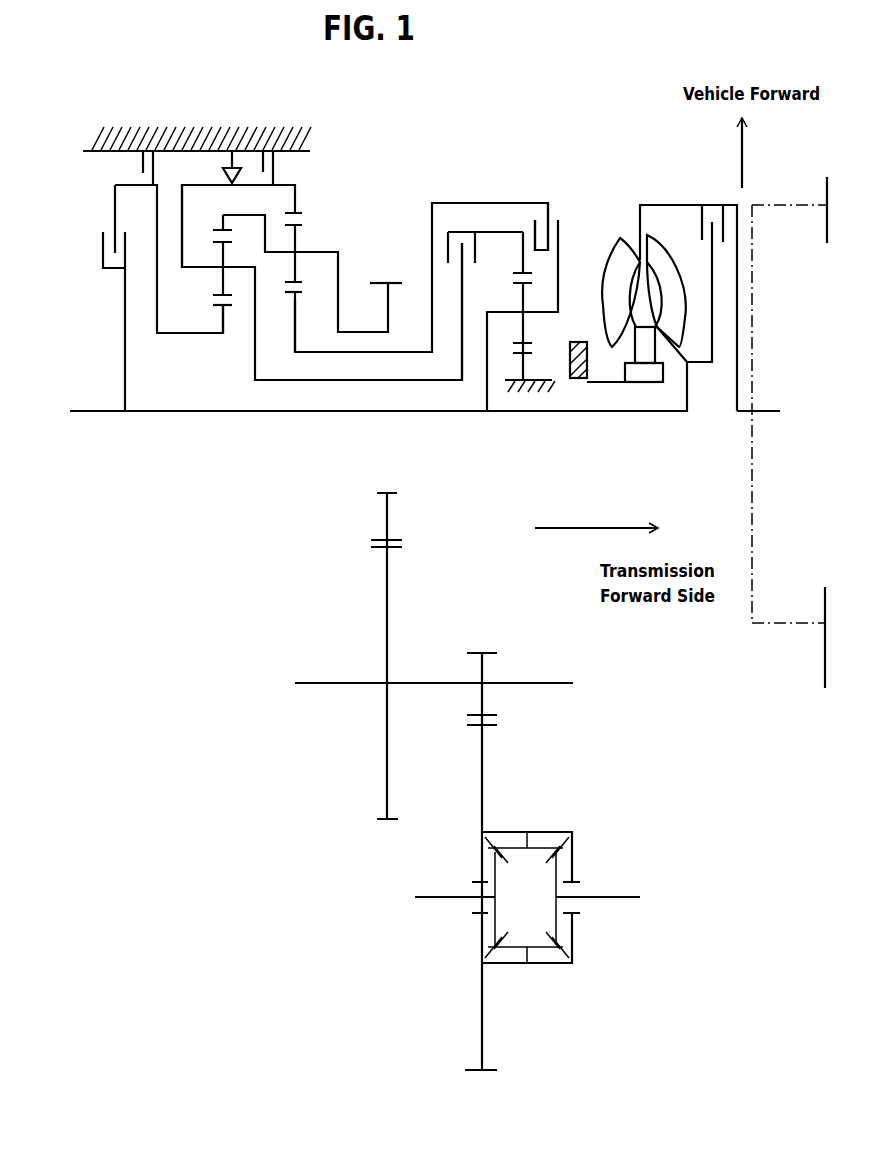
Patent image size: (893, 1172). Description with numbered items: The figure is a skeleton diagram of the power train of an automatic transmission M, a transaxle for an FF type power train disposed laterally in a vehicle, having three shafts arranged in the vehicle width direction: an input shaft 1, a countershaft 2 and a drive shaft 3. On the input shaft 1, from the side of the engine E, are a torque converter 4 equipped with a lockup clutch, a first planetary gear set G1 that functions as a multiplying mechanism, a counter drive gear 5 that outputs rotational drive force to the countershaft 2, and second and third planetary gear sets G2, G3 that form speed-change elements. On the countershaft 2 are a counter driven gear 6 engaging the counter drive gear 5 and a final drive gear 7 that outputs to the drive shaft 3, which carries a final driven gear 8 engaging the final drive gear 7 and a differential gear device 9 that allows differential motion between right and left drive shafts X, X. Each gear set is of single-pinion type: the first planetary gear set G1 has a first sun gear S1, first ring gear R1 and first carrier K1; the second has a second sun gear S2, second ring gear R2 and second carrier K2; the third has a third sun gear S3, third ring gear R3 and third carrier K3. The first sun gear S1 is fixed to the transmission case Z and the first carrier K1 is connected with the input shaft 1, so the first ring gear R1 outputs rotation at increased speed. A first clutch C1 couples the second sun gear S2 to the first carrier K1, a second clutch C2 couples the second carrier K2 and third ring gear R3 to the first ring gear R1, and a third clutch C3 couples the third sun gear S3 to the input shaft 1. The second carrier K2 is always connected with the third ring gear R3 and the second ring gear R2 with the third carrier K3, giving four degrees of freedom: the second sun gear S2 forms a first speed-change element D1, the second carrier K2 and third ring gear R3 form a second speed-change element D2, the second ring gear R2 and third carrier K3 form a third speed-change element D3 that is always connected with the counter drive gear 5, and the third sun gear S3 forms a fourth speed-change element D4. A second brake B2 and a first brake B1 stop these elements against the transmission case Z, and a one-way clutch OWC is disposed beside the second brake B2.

The input shaft 1 is at (190, 412).
The countershaft 2 is at (340, 680).
The drive shaft 3 is at (427, 893).
The torque converter 4 is at (658, 205).
The counter drive gear 5 is at (385, 283).
The counter driven gear 6 is at (398, 548).
The final drive gear 7 is at (487, 653).
The final driven gear 8 is at (497, 728).
The differential gear device 9 is at (543, 832).
The first brake B1 is at (141, 164).
The second brake B2 is at (282, 161).
The first clutch C1 is at (560, 228).
The second clutch C2 is at (447, 242).
The third clutch C3 is at (103, 253).
The first ring gear R1 is at (530, 274).
The second ring gear R2 is at (302, 214).
The third ring gear R3 is at (216, 228).
The first carrier K1 is at (503, 312).
The second carrier K2 is at (318, 253).
The third carrier K3 is at (199, 268).
The first sun gear S1 is at (533, 354).
The second sun gear S2 is at (300, 294).
The third sun gear S3 is at (228, 307).
The first speed-change element D1 is at (322, 326).
The second speed-change element D2 is at (232, 214).
The third speed-change element D3 is at (212, 185).
The fourth speed-change element D4 is at (208, 354).
The first planetary gear set G1 is at (572, 292).
The second planetary gear set G2 is at (318, 233).
The third planetary gear set G3 is at (213, 348).
The one-way clutch OWC is at (236, 150).
The automatic transmission M is at (482, 178).
The engine E is at (780, 205).
The drive shafts X is at (432, 900).
The transmission case Z is at (82, 156).